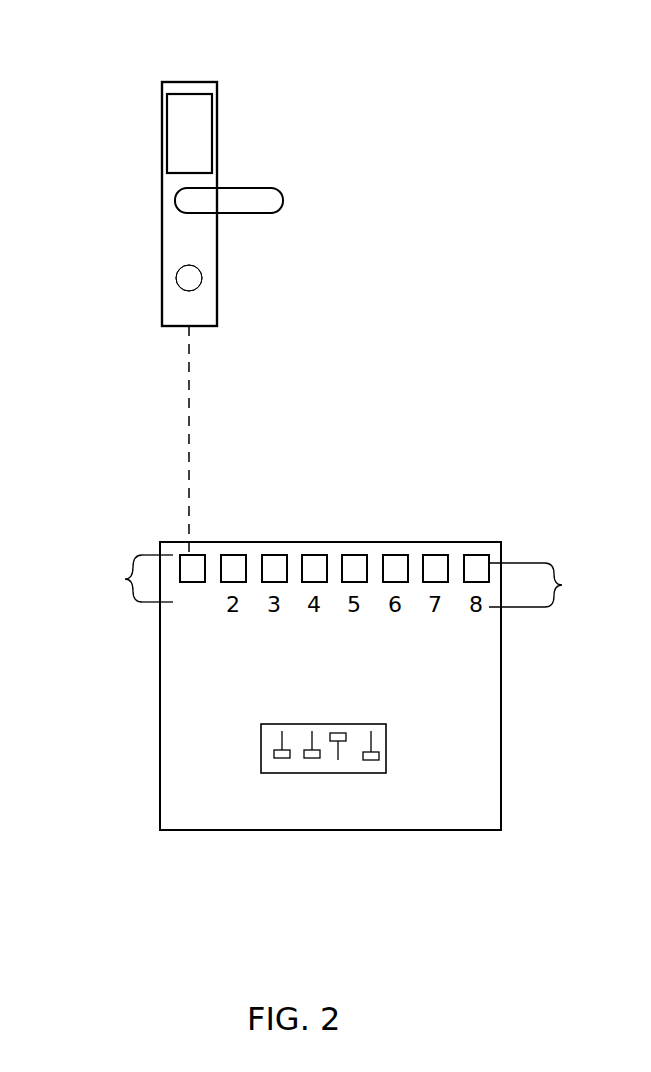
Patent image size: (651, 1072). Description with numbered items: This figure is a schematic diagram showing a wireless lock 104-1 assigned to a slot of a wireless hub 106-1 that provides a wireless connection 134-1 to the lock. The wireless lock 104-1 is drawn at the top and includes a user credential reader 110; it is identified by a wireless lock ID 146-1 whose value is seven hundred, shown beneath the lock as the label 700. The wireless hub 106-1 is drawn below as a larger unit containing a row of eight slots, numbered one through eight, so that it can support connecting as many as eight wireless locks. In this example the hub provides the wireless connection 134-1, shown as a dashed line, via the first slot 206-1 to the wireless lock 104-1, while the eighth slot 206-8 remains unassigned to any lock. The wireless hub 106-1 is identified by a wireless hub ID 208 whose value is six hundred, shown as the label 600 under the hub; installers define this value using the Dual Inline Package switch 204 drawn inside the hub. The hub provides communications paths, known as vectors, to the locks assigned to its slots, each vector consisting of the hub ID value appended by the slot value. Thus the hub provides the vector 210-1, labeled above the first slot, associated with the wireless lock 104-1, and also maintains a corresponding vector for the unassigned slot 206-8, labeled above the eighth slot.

The wireless lock 104-1 is at (180, 82).
The user credential reader 110 is at (177, 108).
The wireless lock ID 146-1 is at (122, 340).
The wireless lock ID value 700 is at (172, 221).
The wireless connection 134-1 is at (189, 400).
The vector 210-1 is at (130, 498).
The slot 206-1 is at (117, 578).
The slot 206-8 is at (557, 585).
The wireless hub 106-1 is at (160, 735).
The Dual Inline Package switch 204 is at (387, 752).
The wireless hub ID value 600 is at (330, 708).
The wireless hub ID 208 is at (357, 866).